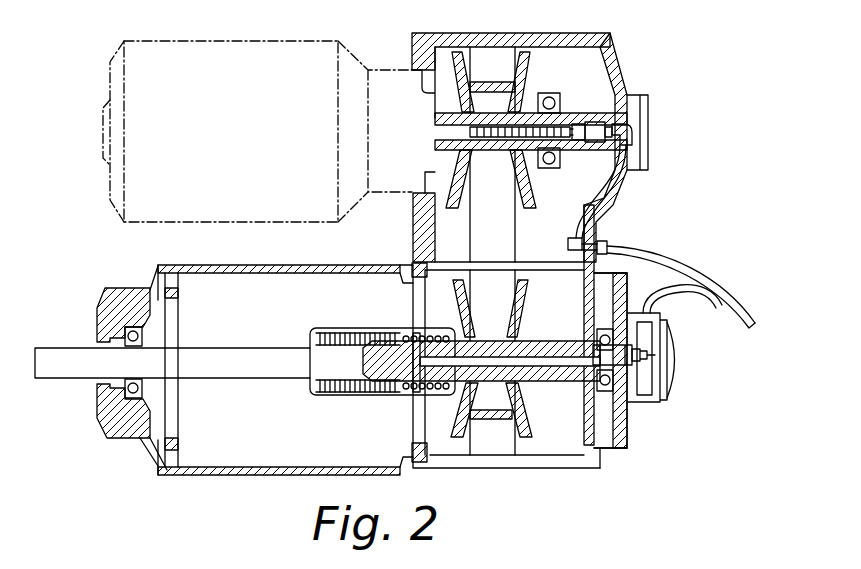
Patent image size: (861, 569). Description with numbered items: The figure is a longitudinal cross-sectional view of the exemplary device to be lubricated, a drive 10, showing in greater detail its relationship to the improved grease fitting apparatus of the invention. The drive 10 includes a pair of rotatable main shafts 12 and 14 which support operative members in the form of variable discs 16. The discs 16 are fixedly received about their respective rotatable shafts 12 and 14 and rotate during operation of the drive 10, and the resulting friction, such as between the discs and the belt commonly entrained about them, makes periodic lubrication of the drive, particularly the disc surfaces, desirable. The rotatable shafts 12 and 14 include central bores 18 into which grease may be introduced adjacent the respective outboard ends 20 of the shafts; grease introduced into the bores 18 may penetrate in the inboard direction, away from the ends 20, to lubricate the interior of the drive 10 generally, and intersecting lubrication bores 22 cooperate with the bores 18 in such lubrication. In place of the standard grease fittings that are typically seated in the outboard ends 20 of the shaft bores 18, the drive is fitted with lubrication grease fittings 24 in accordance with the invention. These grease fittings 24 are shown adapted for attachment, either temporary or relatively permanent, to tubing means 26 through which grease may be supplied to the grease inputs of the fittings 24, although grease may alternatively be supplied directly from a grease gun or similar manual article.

The drive 10 is at (624, 465).
The rotatable shaft 12 is at (581, 120).
The rotatable shaft 14 is at (636, 385).
The variable discs 16 is at (472, 58).
The central bores 18 is at (566, 133).
The outboard ends 20 is at (648, 115).
The lubrication bores 22 is at (437, 332).
The lubrication grease fittings 24 is at (648, 151).
The tubing means 26 is at (578, 193).